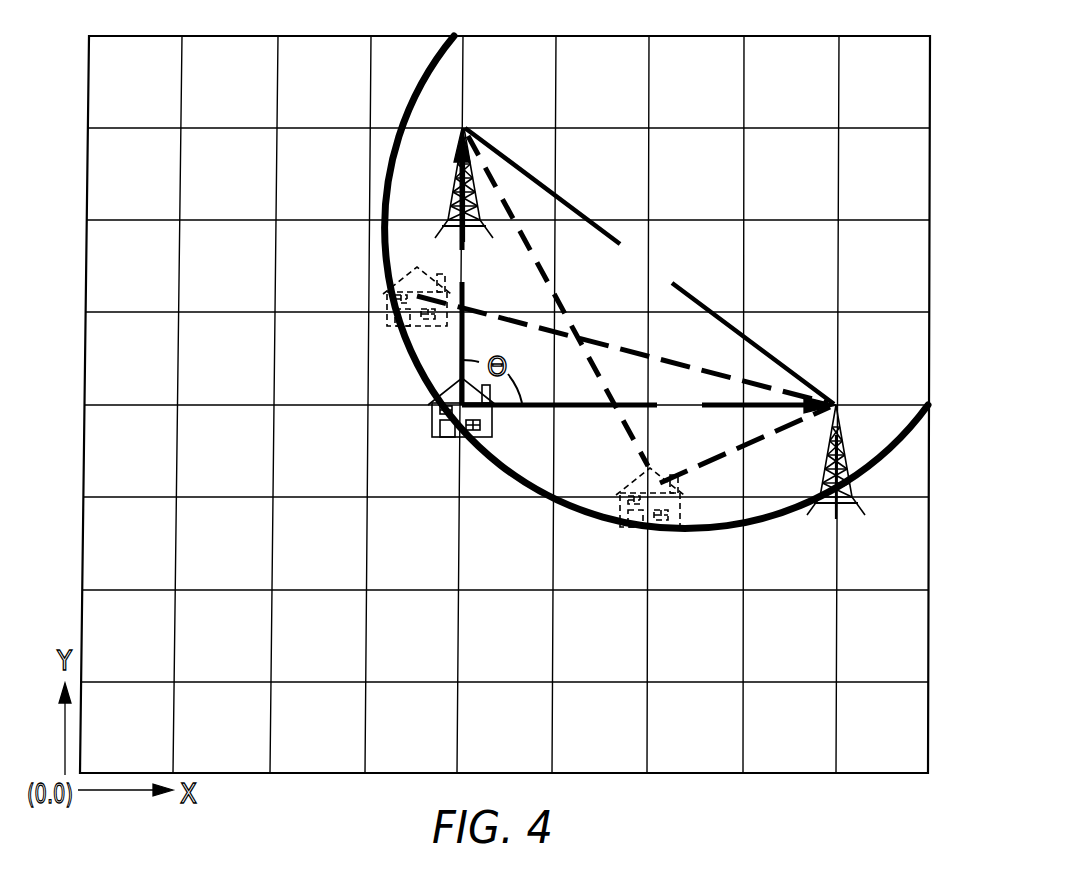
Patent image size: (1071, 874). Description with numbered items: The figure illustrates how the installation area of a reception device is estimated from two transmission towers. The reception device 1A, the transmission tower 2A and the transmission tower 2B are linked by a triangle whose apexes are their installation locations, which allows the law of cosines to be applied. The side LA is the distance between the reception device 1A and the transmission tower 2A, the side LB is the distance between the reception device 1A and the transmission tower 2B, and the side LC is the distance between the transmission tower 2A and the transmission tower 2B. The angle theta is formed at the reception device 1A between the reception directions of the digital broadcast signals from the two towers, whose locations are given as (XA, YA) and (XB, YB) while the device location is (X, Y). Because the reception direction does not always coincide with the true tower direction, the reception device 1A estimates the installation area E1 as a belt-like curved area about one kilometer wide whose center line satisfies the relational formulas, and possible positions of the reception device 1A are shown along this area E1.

The reception device 1A is at (388, 302).
The transmission tower 2A is at (477, 200).
The transmission tower 2B is at (840, 428).
The installation area E1 is at (527, 458).
The distance between the reception device and the transmission tower 2A LA is at (462, 266).
The distance between the reception device and the transmission tower 2B LB is at (649, 404).
The distance between the transmission towers LC is at (649, 266).